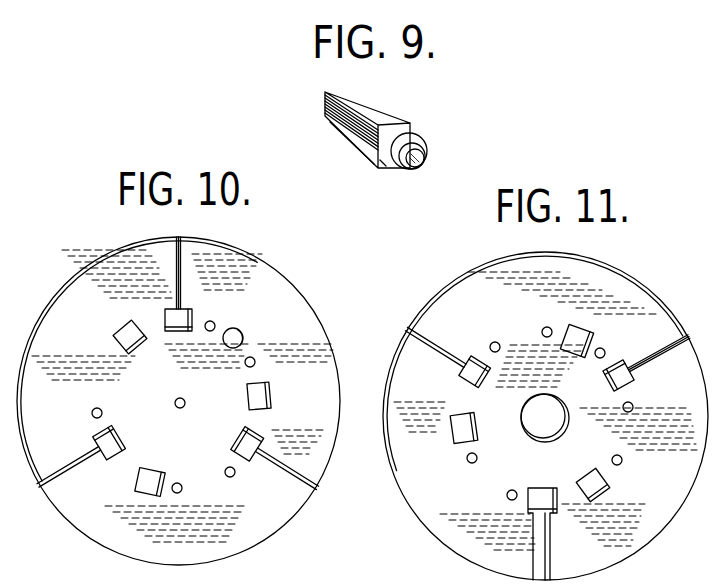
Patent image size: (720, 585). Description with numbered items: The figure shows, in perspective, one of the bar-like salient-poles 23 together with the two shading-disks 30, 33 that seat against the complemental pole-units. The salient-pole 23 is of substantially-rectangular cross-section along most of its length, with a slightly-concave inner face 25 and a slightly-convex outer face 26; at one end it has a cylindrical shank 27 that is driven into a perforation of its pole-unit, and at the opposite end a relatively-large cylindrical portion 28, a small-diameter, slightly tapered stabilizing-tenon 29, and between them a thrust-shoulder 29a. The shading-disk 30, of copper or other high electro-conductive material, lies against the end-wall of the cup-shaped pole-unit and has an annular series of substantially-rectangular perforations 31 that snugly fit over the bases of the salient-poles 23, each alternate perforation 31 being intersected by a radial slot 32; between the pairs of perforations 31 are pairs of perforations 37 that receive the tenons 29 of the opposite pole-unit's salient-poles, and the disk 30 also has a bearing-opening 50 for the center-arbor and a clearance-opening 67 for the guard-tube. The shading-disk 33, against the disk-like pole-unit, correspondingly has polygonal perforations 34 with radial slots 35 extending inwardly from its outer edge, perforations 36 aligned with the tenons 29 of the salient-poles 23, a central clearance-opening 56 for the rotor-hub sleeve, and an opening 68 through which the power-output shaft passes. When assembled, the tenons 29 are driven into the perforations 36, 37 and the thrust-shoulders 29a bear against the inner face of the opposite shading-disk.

In FIG. 9, the salient-pole 23 is at (377, 110).
In FIG. 9, the concave inner face 25 is at (358, 146).
In FIG. 9, the convex outer face 26 is at (411, 130).
In FIG. 9, the cylindrical shank 27 is at (325, 108).
In FIG. 9, the cylindrical portion 28 is at (426, 144).
In FIG. 9, the stabilizing-tenon 29 is at (421, 164).
In FIG. 9, the thrust-shoulder 29a is at (382, 169).
In FIG. 10, the shading-disk 30 is at (289, 284).
In FIG. 10, the rectangular perforation 31 is at (128, 323).
In FIG. 10, the radial slot 32 is at (186, 280).
In FIG. 11, the shading-disk 33 is at (656, 296).
In FIG. 11, the polygonal perforation 34 is at (583, 329).
In FIG. 11, the radial slot 35 is at (450, 332).
In FIG. 11, the perforation 36 is at (541, 330).
In FIG. 10, the perforation 37 is at (256, 363).
In FIG. 10, the bearing-opening 50 is at (186, 405).
In FIG. 11, the clearance-opening 56 is at (521, 421).
In FIG. 10, the clearance-opening 67 is at (245, 321).
In FIG. 11, the opening 68 is at (605, 352).